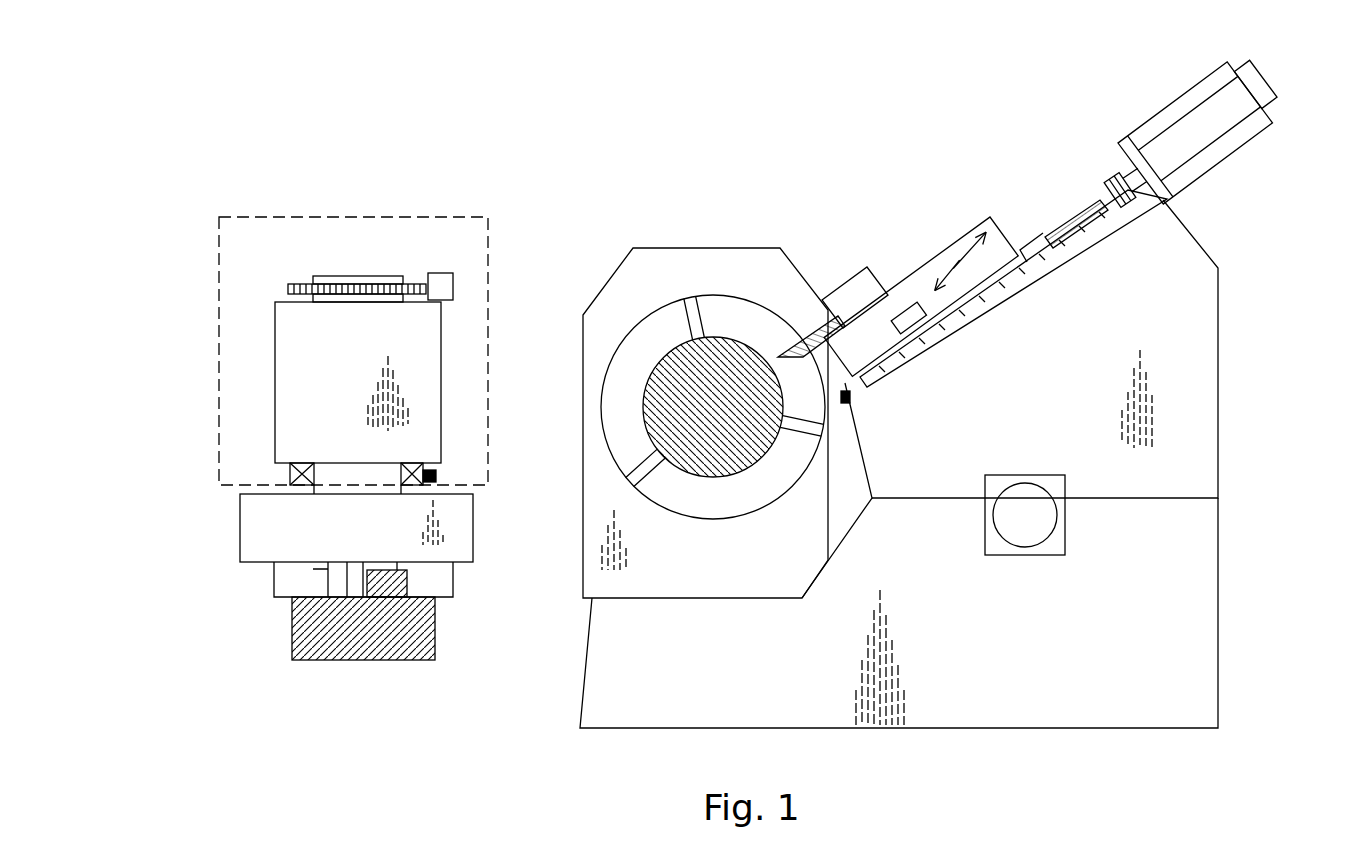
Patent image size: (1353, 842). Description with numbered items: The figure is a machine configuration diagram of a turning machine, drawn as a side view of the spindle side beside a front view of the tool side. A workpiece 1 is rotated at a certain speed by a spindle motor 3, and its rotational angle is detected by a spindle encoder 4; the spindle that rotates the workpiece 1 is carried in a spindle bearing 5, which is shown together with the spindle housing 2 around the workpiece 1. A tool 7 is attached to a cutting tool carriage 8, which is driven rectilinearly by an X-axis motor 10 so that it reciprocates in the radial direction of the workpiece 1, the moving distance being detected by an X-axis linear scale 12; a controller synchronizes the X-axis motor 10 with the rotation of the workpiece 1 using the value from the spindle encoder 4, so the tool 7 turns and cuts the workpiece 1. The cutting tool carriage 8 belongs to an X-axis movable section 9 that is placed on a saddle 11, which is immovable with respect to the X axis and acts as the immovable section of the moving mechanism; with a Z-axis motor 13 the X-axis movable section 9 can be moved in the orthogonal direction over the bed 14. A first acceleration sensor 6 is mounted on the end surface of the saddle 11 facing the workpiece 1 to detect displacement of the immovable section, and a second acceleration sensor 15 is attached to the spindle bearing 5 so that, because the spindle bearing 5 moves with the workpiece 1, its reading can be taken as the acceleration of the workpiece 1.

The workpiece 1 is at (307, 637).
The spindle housing 2 is at (258, 523).
The spindle motor 3 is at (300, 367).
The spindle encoder 4 is at (440, 274).
The spindle bearing 5 is at (290, 475).
The first acceleration sensor 6 is at (853, 395).
The tool 7 is at (811, 342).
The cutting tool carriage 8 is at (856, 290).
The X-axis movable section 9 is at (1002, 228).
The X-axis motor 10 is at (1200, 110).
The saddle 11 is at (1200, 345).
The X-axis linear scale 12 is at (990, 292).
The Z-axis motor 13 is at (1030, 527).
The bed 14 is at (1165, 690).
The second acceleration sensor 15 is at (438, 476).